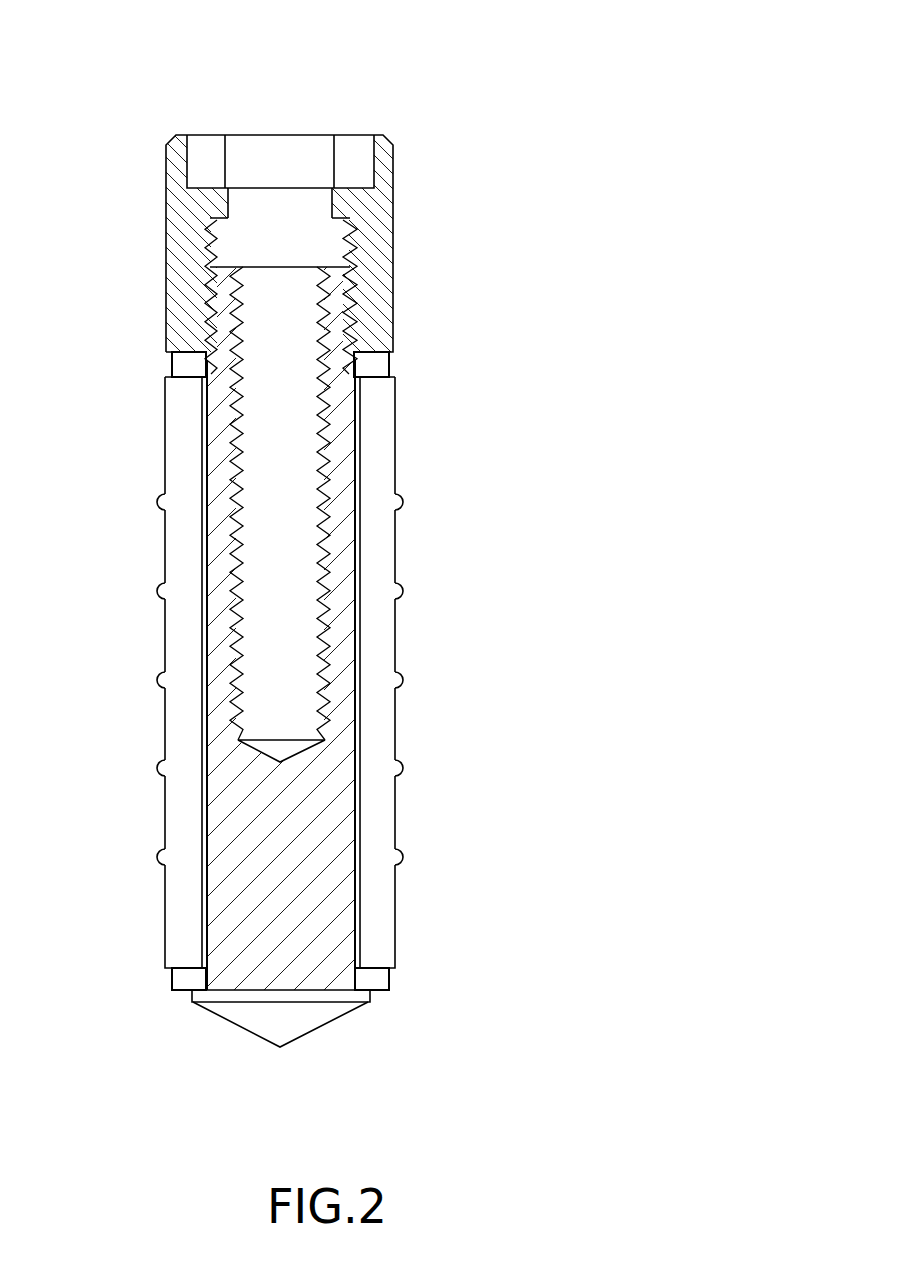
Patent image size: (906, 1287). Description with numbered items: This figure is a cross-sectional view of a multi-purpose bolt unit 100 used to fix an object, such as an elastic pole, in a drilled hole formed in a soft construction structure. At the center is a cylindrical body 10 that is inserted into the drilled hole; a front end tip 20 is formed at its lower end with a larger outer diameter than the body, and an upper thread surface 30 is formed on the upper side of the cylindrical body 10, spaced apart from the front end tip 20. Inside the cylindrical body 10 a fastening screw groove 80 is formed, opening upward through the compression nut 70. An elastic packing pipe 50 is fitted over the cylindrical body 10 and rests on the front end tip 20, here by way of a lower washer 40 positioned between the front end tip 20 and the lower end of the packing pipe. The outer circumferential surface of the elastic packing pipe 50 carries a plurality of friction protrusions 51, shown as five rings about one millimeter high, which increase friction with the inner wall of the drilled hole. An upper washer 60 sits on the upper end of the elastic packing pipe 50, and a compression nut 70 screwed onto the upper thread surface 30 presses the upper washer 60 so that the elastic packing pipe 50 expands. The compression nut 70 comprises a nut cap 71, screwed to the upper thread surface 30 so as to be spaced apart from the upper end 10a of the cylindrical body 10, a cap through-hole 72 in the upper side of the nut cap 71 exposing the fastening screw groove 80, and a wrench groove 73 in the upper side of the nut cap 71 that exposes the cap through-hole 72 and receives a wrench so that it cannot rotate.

The bolt unit 100 is at (455, 131).
The cylindrical body 10 is at (309, 830).
The upper end 10a is at (343, 241).
The front end tip 20 is at (312, 1019).
The upper thread surface 30 is at (355, 305).
The lower washer 40 is at (379, 979).
The elastic packing pipe 50 is at (376, 555).
The friction protrusions 51 is at (403, 500).
The upper washer 60 is at (381, 363).
The compression nut 70 is at (184, 202).
The nut cap 71 is at (183, 278).
The cap through-hole 72 is at (272, 195).
The wrench groove 73 is at (208, 150).
The fastening screw groove 80 is at (310, 662).